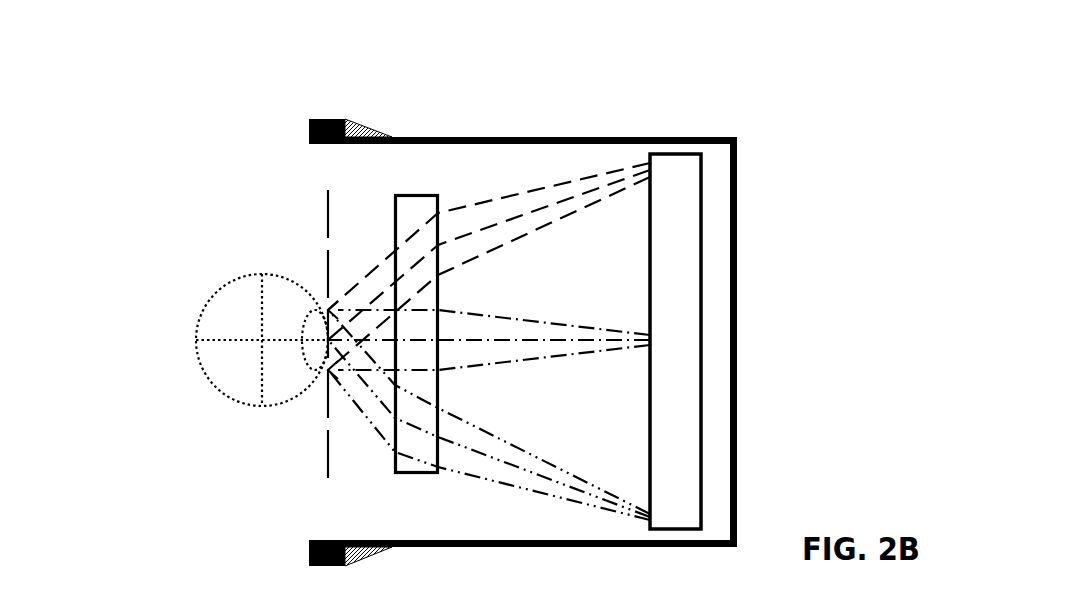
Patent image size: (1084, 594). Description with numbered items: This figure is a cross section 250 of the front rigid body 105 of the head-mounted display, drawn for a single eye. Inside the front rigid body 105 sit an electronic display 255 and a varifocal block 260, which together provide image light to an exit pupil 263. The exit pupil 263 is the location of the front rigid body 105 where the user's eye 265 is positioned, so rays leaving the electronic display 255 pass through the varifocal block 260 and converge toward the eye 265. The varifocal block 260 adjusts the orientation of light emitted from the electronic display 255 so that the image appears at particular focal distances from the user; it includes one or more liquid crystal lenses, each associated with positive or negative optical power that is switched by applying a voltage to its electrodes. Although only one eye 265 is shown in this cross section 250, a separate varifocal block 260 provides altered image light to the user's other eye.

The cross section 250 is at (82, 42).
The front rigid body 105 is at (703, 137).
The electronic display 255 is at (702, 183).
The varifocal block 260 is at (395, 208).
The exit pupil 263 is at (325, 463).
The eye 265 is at (227, 283).